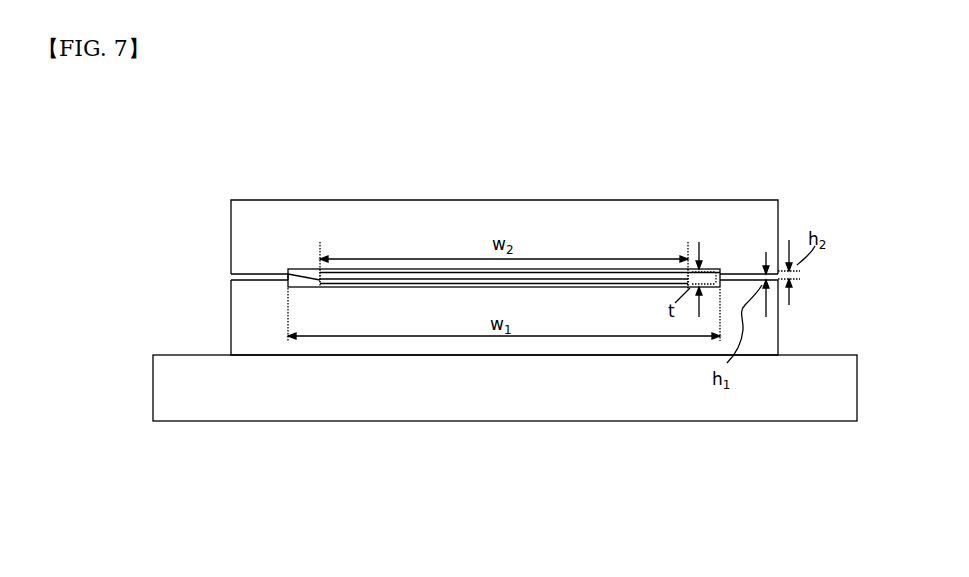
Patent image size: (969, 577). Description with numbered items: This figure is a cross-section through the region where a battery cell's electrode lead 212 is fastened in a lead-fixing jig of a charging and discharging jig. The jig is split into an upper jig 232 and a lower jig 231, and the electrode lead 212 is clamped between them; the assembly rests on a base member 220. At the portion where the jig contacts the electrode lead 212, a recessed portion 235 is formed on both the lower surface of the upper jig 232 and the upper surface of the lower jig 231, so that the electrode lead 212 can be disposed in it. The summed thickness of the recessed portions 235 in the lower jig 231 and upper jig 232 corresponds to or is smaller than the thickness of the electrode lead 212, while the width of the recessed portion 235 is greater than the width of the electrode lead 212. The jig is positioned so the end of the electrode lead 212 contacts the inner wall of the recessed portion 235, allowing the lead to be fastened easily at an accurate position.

The electrode lead 212 is at (287, 272).
The substrate 220 is at (473, 422).
The lower jig 231 is at (235, 310).
The upper jig 232 is at (535, 199).
The recessed portion 235 is at (287, 288).